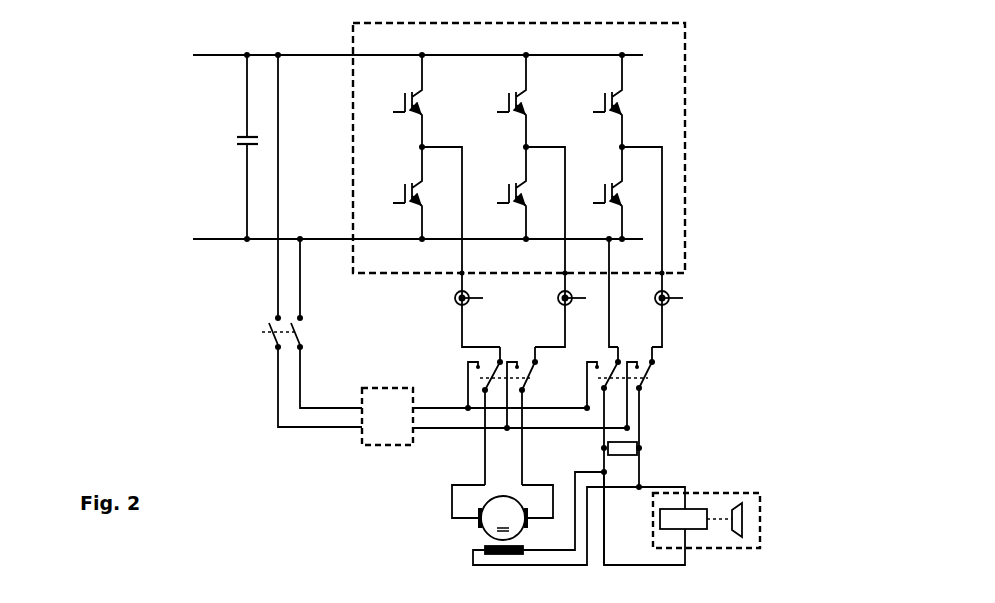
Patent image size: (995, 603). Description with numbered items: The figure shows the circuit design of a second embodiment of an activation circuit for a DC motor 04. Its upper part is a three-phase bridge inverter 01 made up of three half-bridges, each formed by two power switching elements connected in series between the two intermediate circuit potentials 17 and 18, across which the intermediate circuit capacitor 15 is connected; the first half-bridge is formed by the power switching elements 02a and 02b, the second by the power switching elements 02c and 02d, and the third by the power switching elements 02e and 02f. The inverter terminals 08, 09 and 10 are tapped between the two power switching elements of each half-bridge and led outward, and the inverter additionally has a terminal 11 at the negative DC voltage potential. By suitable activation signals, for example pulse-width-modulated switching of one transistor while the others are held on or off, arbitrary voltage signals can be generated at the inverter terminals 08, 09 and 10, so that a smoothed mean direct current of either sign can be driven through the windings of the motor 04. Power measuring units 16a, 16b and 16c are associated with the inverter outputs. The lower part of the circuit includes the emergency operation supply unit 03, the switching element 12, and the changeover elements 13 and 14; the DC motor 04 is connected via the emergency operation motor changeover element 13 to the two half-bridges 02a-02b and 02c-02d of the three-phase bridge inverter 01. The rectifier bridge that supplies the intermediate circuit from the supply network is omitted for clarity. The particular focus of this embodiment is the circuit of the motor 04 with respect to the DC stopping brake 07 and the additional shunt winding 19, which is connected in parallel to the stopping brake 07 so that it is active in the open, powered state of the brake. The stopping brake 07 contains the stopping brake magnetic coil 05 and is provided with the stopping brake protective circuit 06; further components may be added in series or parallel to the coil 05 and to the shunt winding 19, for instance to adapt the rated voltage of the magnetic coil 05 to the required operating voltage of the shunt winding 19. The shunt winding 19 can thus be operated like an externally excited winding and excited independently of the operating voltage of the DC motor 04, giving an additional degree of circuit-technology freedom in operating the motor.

The three-phase bridge inverter 01 is at (693, 72).
The power switching element 02a is at (394, 101).
The power switching element 02b is at (393, 193).
The power switching element 02c is at (500, 101).
The power switching element 02d is at (499, 193).
The power switching element 02e is at (596, 101).
The power switching element 02f is at (596, 193).
The emergency operation supply unit 03 is at (365, 447).
The DC motor 04 is at (478, 528).
The stopping brake magnetic coil 05 is at (693, 530).
The stopping brake protective circuit 06 is at (640, 442).
The stopping brake 07 is at (706, 514).
The inverter terminal 08 is at (458, 275).
The inverter terminal 09 is at (562, 275).
The inverter terminal 10 is at (668, 275).
The terminal of the DC voltage potential UZK− 11 is at (612, 275).
The switching element 12 is at (260, 332).
The emergency operation motor changeover element 13 is at (480, 378).
The changeover element 14 is at (650, 378).
The intermediate circuit capacitor 15 is at (245, 136).
The power measuring unit 16a is at (468, 302).
The power measuring unit 16b is at (568, 305).
The power measuring unit 16c is at (682, 307).
The intermediate circuit potential 17 is at (226, 55).
The intermediate circuit potential 18 is at (215, 241).
The shunt winding 19 is at (498, 555).